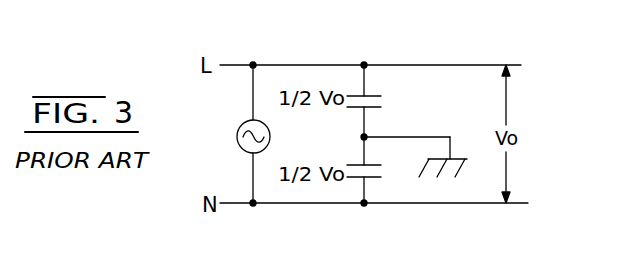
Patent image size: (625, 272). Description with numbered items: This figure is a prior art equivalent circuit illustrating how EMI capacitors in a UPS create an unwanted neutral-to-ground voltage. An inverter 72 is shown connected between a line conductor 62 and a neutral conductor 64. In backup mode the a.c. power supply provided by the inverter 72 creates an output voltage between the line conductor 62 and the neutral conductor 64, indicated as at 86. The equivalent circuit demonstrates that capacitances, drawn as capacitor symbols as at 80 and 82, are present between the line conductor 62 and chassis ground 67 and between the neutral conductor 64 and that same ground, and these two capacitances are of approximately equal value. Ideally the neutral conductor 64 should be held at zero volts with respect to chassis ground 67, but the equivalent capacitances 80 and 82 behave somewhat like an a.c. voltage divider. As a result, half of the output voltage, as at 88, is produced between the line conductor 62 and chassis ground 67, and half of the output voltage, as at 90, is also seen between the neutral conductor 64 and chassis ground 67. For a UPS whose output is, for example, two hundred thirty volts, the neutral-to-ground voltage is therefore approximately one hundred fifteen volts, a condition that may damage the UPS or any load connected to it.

The line conductor 62 is at (240, 63).
The neutral conductor 64 is at (237, 207).
The inverter 72 is at (237, 139).
The half of output voltage between line conductor and chassis ground 88 is at (323, 78).
The half of output voltage between neutral conductor and chassis ground 90 is at (322, 195).
The equivalent capacitance 80 is at (375, 94).
The equivalent capacitance 82 is at (375, 178).
The output voltage 86 is at (517, 128).
The chassis ground 67 is at (468, 163).